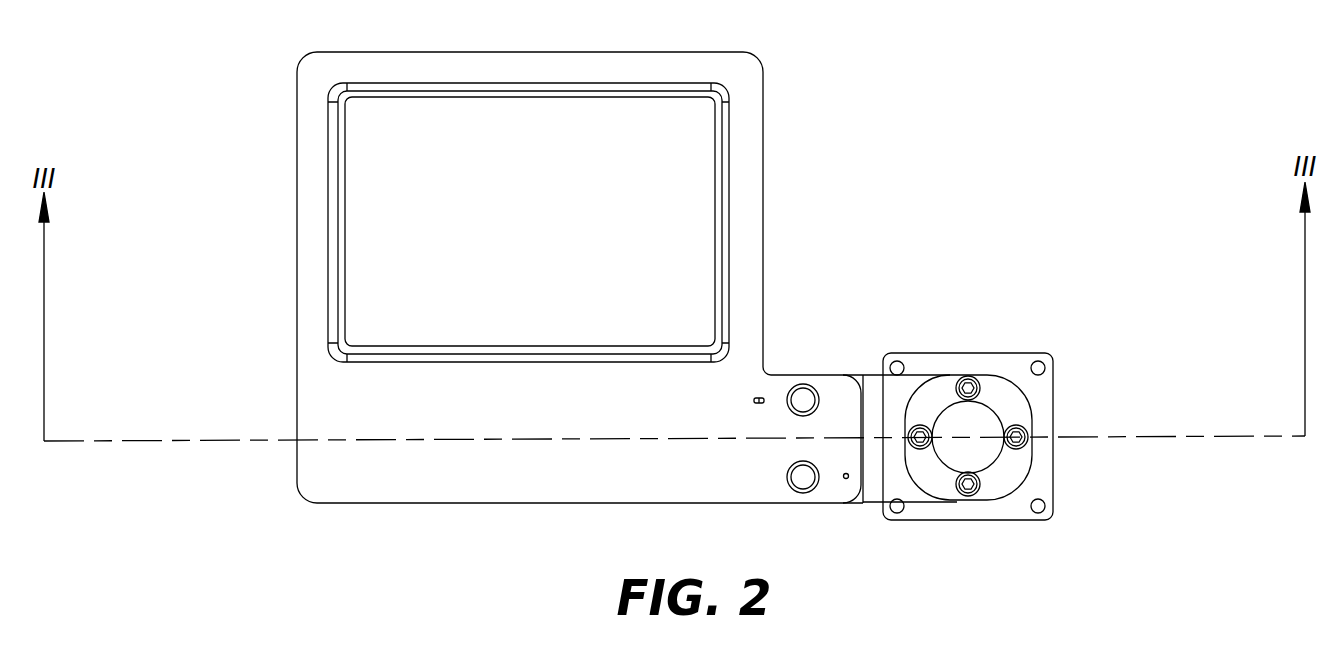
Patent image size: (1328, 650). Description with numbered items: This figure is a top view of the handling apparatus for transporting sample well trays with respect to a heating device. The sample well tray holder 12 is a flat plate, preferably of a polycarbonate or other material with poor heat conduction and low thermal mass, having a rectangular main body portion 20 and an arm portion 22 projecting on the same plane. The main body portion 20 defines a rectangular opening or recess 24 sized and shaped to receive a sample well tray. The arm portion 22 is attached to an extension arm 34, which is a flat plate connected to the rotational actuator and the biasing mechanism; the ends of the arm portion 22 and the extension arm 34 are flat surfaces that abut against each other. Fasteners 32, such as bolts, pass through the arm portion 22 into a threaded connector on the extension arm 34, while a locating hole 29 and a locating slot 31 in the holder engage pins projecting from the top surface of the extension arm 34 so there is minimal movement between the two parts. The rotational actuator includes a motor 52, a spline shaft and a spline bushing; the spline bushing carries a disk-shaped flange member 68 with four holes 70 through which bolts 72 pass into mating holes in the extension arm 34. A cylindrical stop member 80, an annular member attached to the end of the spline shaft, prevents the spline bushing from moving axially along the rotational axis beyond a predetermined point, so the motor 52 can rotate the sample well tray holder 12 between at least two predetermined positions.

The sample well tray holder 12 is at (484, 522).
The main body portion 20 is at (562, 490).
The arm portion 22 is at (842, 400).
The rectangular opening or recess 24 is at (528, 112).
The locating hole 29 is at (846, 480).
The locating slot 31 is at (765, 396).
The fasteners 32 is at (798, 470).
The extension arm 34 is at (890, 488).
The motor 52 is at (1047, 464).
The flange member 68 is at (945, 482).
The holes 70 is at (975, 384).
The bolts 72 is at (967, 382).
The cylindrical stop member 80 is at (987, 417).